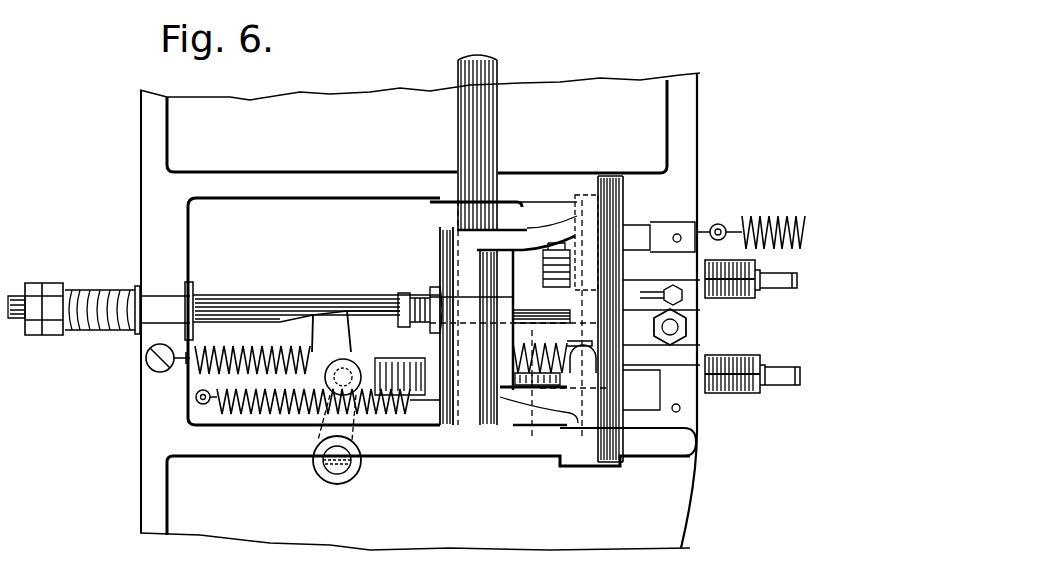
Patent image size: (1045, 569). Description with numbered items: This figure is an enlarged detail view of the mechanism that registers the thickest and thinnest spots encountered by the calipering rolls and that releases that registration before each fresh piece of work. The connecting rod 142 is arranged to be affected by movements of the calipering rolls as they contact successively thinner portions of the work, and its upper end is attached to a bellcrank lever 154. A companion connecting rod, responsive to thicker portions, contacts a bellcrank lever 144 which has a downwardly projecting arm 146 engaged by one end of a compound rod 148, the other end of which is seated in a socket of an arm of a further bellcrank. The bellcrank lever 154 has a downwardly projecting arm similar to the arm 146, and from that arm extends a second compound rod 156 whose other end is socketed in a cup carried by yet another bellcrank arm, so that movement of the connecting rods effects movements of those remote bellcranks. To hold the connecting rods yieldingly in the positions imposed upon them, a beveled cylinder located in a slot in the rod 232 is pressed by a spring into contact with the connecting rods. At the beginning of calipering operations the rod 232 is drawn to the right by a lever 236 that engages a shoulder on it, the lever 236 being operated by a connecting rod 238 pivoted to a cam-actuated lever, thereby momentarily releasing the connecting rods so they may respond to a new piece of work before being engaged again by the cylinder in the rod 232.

The connecting rod 142 is at (690, 327).
The bellcrank lever 144 is at (631, 245).
The downwardly projecting arm 146 is at (578, 232).
The compound rod 148 is at (780, 290).
The bellcrank lever 154 is at (632, 395).
The second compound rod 156 is at (787, 388).
The rod 232 is at (349, 308).
The lever 236 is at (326, 338).
The connecting rod 238 is at (534, 430).